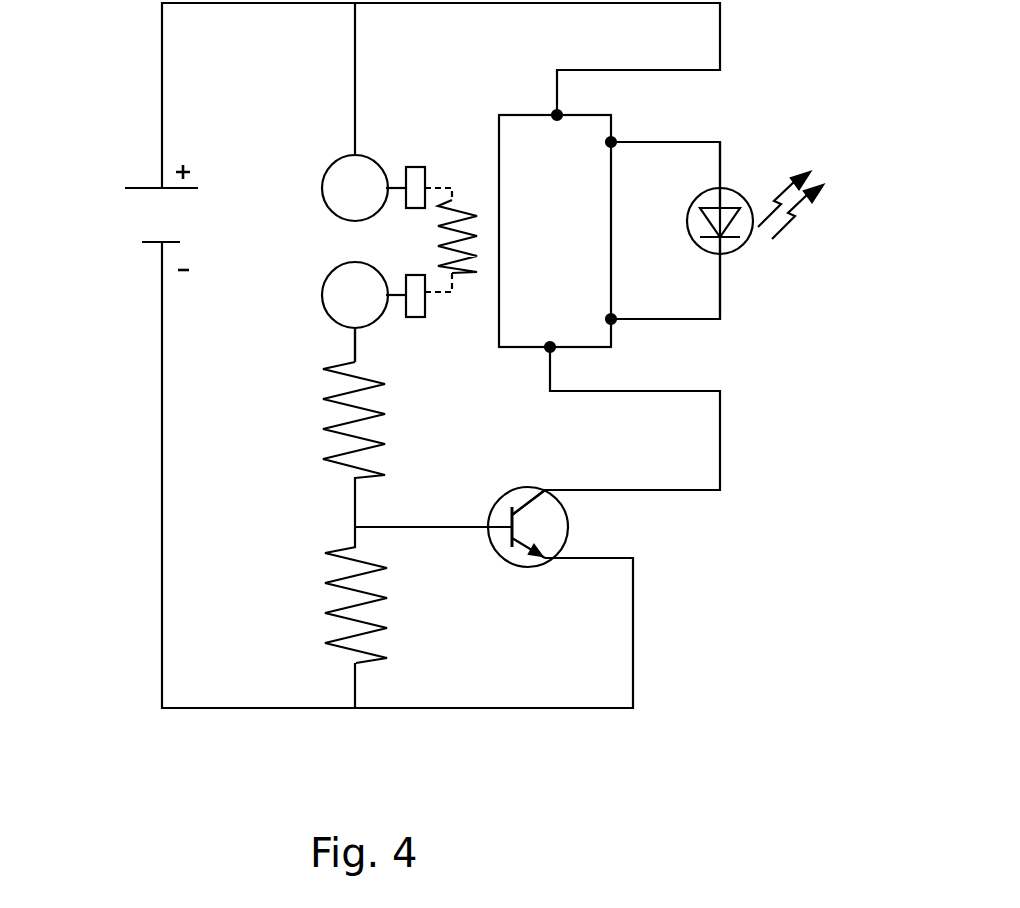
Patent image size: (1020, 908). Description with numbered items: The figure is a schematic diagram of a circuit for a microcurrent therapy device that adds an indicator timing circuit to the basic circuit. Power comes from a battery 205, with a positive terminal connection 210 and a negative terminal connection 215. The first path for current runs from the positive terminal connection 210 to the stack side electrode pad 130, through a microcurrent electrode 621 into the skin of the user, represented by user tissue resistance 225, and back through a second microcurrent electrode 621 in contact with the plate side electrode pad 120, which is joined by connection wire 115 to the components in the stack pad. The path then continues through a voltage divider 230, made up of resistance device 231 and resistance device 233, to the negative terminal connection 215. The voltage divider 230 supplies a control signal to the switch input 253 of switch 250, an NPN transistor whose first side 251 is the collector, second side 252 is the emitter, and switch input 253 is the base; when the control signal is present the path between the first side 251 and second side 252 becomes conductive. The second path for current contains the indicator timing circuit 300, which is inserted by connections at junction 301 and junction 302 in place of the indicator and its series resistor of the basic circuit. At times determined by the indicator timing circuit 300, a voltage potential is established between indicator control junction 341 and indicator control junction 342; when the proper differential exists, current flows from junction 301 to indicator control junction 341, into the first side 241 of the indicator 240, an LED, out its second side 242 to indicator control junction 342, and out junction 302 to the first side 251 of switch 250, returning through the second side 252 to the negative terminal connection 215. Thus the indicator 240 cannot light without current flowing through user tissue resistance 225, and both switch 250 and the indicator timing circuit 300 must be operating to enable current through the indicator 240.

The battery 205 is at (117, 145).
The positive terminal connection 210 is at (196, 188).
The negative terminal connection 215 is at (175, 242).
The stack side electrode pad 130 is at (340, 204).
The plate side electrode pad 120 is at (340, 311).
The microcurrent electrode 621 is at (415, 167).
The user tissue resistance 225 is at (478, 228).
The indicator timing circuit 300 is at (537, 244).
The junction 301 is at (579, 99).
The junction 302 is at (575, 364).
The indicator control junction 341 is at (641, 131).
The indicator control junction 342 is at (637, 310).
The indicator 240 is at (827, 165).
The first side 241 is at (698, 165).
The second side 242 is at (698, 286).
The connection wire 115 is at (355, 346).
The voltage divider 230 is at (322, 514).
The resistance device 231 is at (388, 355).
The resistance device 233 is at (319, 604).
The switch 250 is at (485, 487).
The first side 251 is at (588, 490).
The second side 252 is at (583, 558).
The switch input 253 is at (440, 527).